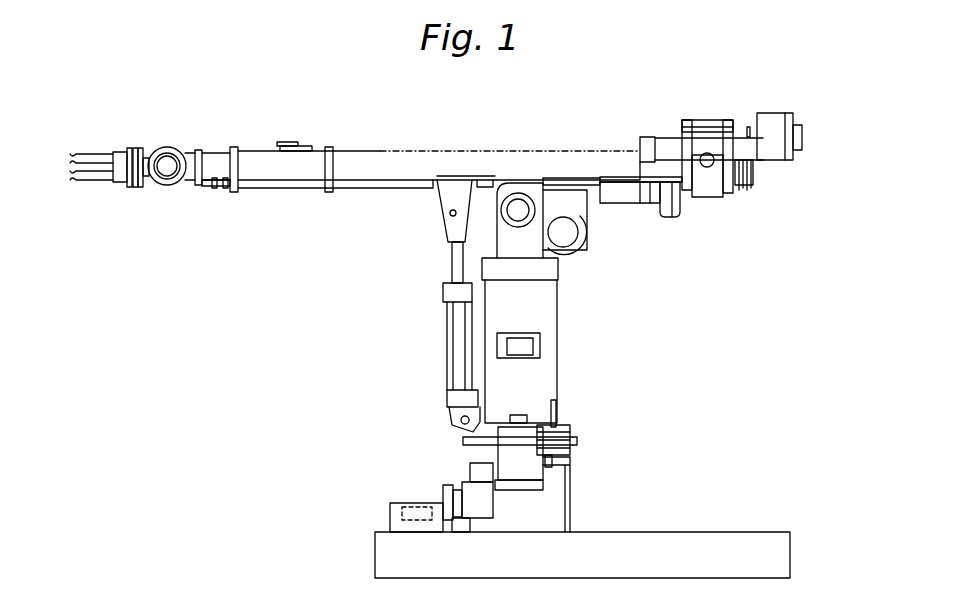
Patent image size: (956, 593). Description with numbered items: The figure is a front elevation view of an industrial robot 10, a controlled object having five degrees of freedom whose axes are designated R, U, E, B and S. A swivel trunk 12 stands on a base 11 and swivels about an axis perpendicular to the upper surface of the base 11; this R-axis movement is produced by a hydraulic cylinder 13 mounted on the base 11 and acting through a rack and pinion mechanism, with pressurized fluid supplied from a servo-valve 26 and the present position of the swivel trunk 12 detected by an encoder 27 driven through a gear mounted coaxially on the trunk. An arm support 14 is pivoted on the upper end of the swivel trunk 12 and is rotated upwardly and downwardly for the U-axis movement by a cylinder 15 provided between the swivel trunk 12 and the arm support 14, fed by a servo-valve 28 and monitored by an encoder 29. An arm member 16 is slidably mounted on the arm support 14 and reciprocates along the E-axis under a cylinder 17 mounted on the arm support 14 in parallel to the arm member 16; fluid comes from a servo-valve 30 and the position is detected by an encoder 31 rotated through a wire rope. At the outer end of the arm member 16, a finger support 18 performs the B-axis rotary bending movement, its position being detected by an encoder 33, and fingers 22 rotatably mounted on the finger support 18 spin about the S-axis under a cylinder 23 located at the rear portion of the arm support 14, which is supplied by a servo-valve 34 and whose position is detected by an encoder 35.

The industrial robot 10 is at (495, 143).
The base 11 is at (626, 530).
The swivel trunk 12 is at (543, 375).
The hydraulic cylinder 13 is at (461, 478).
The arm support 14 is at (459, 160).
The cylinder 15 is at (458, 342).
The arm member 16 is at (222, 160).
The cylinder 17 is at (403, 180).
The finger support 18 is at (145, 155).
The fingers 22 is at (103, 175).
The cylinder 23 is at (667, 148).
The servo-valve 26 is at (416, 500).
The encoder 27 is at (573, 425).
The servo-valve 28 is at (550, 338).
The encoder 29 is at (575, 232).
The servo-valve 30 is at (672, 216).
The encoder 31 is at (718, 197).
The encoder 33 is at (790, 113).
The servo-valve 34 is at (655, 202).
The encoder 35 is at (794, 150).